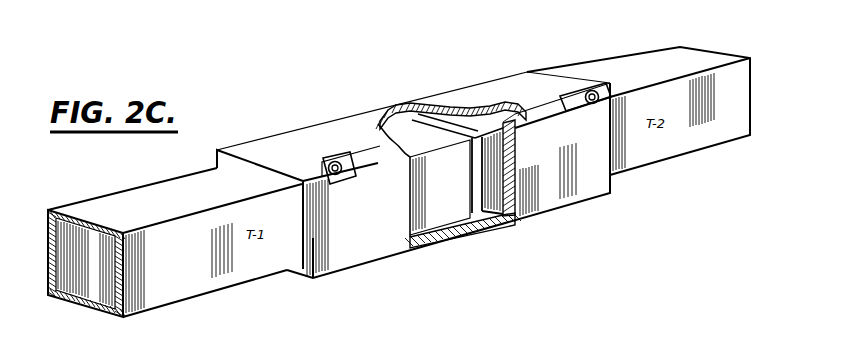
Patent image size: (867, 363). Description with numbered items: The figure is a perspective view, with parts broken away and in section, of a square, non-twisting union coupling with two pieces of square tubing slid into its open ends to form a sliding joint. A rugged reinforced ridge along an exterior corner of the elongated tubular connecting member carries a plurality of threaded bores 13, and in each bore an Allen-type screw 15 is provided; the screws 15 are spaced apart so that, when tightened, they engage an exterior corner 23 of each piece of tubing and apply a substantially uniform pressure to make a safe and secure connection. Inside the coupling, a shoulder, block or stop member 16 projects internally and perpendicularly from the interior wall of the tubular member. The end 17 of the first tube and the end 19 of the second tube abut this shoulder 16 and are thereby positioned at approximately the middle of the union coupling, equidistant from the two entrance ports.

The threaded bore 13 is at (331, 163).
The Allen-type screw 15 is at (344, 170).
The stop member 16 is at (492, 225).
The end of tubing T-1 17 is at (430, 221).
The end of tubing T-2 19 is at (494, 207).
The exterior corner 23 is at (245, 199).